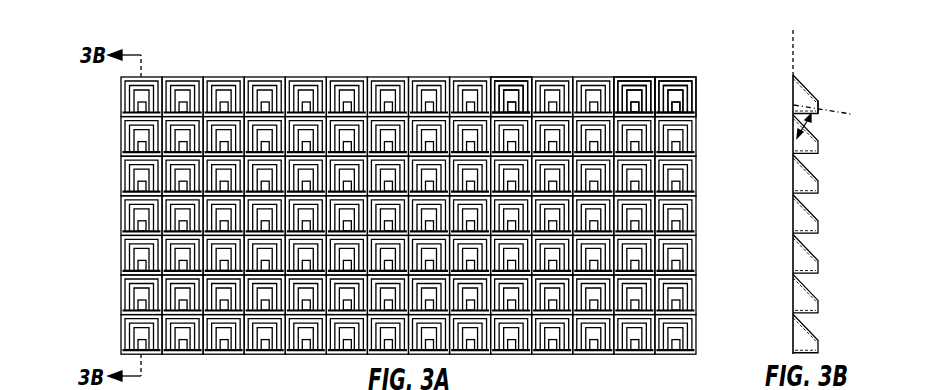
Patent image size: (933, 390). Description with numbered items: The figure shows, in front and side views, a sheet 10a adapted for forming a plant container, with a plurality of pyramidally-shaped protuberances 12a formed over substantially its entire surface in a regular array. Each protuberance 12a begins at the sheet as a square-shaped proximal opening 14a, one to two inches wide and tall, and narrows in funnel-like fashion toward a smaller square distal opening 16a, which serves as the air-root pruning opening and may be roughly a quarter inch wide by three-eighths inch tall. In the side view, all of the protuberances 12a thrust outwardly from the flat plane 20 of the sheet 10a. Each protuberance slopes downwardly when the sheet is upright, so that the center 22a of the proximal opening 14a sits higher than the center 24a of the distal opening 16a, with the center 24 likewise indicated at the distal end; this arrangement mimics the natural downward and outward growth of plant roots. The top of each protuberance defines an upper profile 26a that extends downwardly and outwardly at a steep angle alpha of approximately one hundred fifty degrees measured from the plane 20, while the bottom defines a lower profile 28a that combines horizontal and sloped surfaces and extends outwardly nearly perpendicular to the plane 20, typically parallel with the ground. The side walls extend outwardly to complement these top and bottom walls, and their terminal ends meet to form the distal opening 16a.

In FIG. 3A, the sheet 10a is at (98, 131).
In FIG. 3A, the protuberance 12a is at (668, 83).
In FIG. 3B, the protuberance 12a is at (809, 79).
In FIG. 3A, the proximal opening 14a is at (622, 68).
In FIG. 3B, the proximal opening 14a is at (785, 172).
In FIG. 3A, the distal opening 16a is at (503, 92).
In FIG. 3B, the plane 20 is at (783, 42).
In FIG. 3B, the center of the proximal opening 22a is at (781, 95).
In FIG. 3B, the center of the distal opening 24 is at (810, 317).
In FIG. 3B, the center of the distal opening 24a is at (841, 112).
In FIG. 3B, the upper profile 26a is at (803, 124).
In FIG. 3B, the lower profile 28a is at (787, 119).